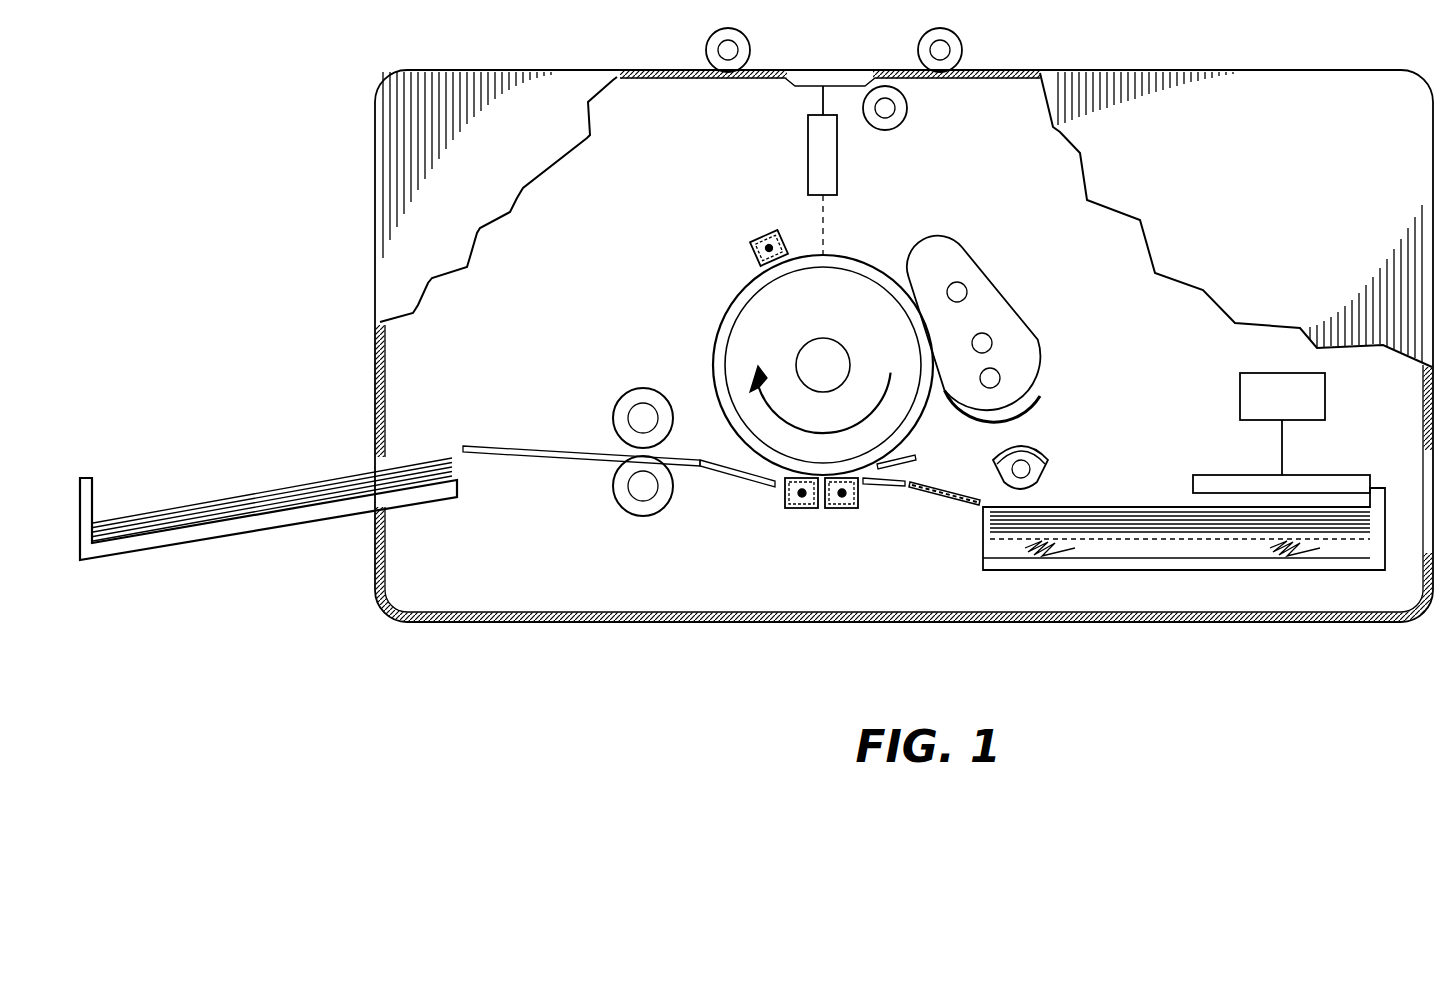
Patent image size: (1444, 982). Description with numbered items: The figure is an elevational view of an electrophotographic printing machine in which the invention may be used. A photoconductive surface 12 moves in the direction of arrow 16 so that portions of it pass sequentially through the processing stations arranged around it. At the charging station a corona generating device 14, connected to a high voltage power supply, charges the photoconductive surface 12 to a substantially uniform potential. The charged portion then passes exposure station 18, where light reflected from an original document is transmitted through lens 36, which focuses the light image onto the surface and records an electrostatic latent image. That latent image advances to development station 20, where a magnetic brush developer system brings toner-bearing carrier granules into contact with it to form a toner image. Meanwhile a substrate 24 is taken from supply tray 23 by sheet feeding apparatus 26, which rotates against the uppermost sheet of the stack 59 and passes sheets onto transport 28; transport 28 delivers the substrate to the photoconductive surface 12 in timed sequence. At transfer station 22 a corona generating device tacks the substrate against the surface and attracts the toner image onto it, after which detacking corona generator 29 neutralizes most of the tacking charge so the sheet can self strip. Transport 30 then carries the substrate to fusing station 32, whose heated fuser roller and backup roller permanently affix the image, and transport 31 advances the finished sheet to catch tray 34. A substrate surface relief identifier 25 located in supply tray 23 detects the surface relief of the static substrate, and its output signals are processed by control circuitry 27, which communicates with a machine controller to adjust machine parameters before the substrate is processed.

The photoconductive surface 12 is at (892, 278).
The corona generating device 14 is at (758, 232).
The arrow 16 is at (876, 402).
The exposure station 18 is at (845, 220).
The development station 20 is at (1008, 280).
The transfer station 22 is at (841, 508).
The supply tray 23 is at (1148, 570).
The substrate 24 is at (1127, 507).
The substrate surface relief identifier 25 is at (1232, 475).
The sheet feeding apparatus 26 is at (1028, 435).
The control circuitry 27 is at (1240, 398).
The transport 28 is at (935, 498).
The detacking corona generator 29 is at (802, 508).
The transport 30 is at (703, 468).
The transport 31 is at (550, 455).
The fusing station 32 is at (643, 388).
The catch tray 34 is at (245, 493).
The lens 36 is at (808, 155).
The stack 59 is at (990, 522).